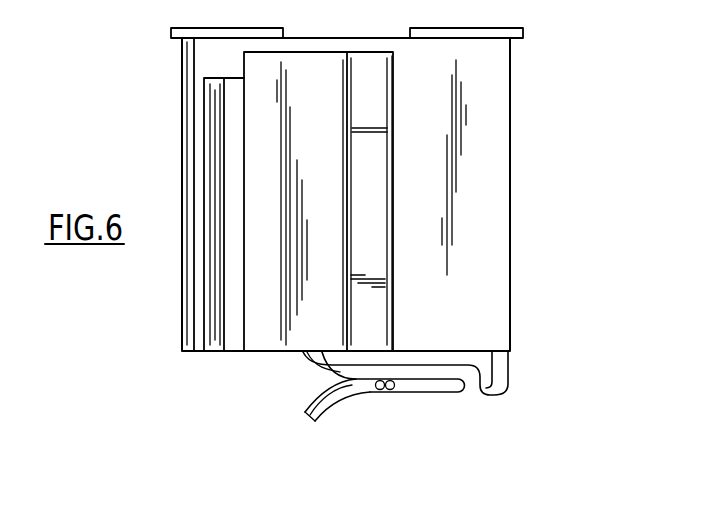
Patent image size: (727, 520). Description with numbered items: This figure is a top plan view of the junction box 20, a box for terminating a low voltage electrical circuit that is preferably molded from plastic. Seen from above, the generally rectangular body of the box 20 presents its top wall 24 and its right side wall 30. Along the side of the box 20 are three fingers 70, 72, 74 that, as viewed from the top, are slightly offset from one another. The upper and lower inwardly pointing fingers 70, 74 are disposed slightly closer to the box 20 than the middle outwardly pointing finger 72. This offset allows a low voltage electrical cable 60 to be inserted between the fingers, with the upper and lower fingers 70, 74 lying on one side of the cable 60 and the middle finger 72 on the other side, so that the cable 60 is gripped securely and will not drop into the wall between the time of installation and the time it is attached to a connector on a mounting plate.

The junction box 20 is at (382, 251).
The top wall 24 is at (455, 219).
The right side wall 30 is at (511, 291).
The low voltage electrical cable 60 is at (392, 389).
The upper inwardly pointing finger 70 is at (355, 378).
The middle outwardly pointing finger 72 is at (368, 404).
The lower inwardly pointing finger 74 is at (320, 362).